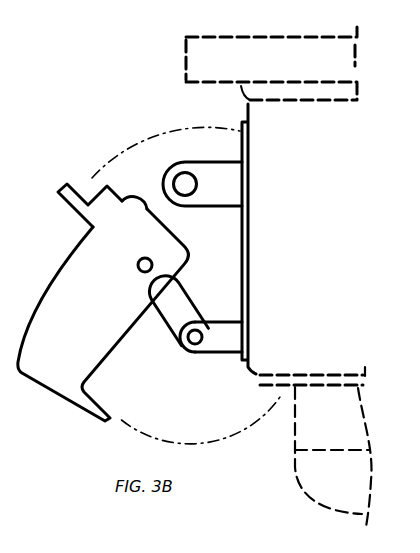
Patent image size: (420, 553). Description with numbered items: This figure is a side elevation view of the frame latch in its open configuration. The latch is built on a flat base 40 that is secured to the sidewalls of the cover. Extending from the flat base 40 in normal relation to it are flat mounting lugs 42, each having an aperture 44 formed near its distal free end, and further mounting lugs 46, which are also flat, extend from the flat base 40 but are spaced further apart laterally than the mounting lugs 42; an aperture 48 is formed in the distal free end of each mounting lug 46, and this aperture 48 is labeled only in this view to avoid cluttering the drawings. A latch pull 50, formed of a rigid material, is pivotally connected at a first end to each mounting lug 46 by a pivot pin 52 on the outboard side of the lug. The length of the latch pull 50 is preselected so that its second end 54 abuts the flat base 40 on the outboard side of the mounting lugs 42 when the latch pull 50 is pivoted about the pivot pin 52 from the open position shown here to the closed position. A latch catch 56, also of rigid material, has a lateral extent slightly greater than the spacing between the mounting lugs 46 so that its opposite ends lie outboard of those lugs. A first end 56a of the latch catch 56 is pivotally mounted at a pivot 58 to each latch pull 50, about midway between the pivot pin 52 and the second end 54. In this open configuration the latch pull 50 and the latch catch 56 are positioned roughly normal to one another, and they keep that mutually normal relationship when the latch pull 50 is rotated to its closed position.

The flat base 40 is at (241, 130).
The mounting lugs 42 is at (201, 162).
The aperture 44 is at (147, 149).
The further mounting lugs 46 is at (222, 322).
The aperture 48 is at (185, 341).
The latch pull 50 is at (178, 305).
The pivot pin 52 is at (200, 345).
The second end 54 is at (100, 202).
The latch catch 56 is at (103, 315).
The first end 56a is at (137, 229).
The pivot 58 is at (150, 258).